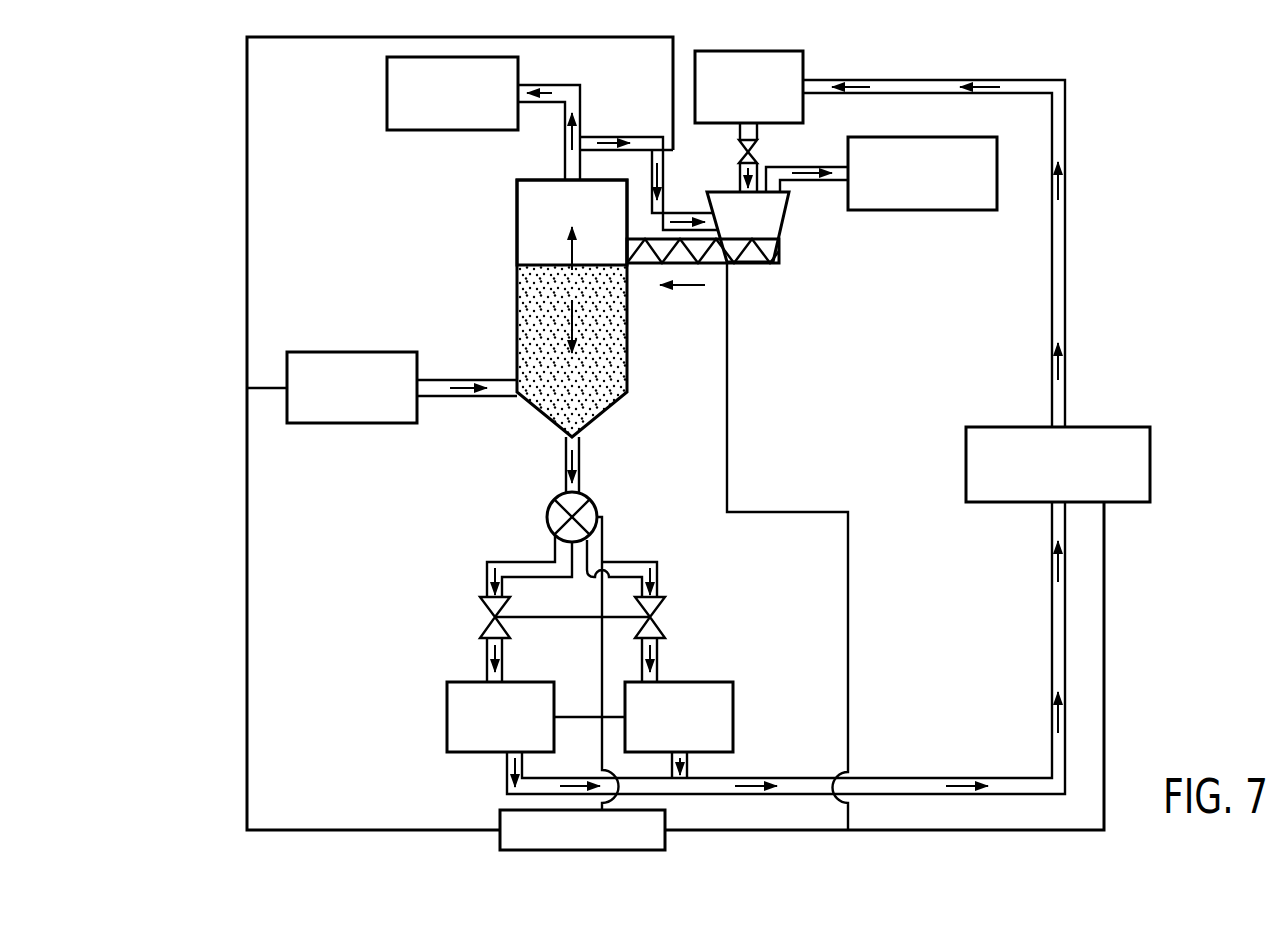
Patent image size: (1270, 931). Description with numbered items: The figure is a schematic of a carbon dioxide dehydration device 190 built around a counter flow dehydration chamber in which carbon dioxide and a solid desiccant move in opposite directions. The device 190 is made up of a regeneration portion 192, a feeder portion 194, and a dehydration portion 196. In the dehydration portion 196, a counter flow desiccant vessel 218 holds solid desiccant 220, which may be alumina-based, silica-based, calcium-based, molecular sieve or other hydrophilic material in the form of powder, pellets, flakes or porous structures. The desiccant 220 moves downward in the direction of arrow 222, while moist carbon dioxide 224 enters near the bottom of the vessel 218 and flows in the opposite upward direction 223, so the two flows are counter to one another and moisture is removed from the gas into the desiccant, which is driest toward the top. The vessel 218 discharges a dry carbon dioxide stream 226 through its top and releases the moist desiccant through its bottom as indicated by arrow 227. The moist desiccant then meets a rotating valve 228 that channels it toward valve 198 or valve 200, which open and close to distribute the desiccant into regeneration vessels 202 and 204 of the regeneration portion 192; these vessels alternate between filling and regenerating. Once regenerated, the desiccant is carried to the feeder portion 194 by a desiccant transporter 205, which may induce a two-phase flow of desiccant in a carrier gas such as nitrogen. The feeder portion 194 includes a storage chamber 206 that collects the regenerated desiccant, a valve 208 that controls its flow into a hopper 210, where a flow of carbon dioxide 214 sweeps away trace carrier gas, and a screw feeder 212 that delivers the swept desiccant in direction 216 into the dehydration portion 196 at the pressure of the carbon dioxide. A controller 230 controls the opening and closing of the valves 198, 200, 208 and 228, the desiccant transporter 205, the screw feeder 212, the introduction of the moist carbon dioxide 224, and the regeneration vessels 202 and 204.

The carbon dioxide dehydration device 190 is at (205, 118).
The regeneration portion 192 is at (412, 578).
The feeder portion 194 is at (808, 259).
The dehydration portion 196 is at (638, 368).
The valve 198 is at (665, 612).
The valve 200 is at (478, 612).
The regeneration vessel 202 is at (447, 715).
The regeneration vessel 204 is at (733, 715).
The desiccant transporter 205 is at (966, 464).
The storage chamber 206 is at (803, 62).
The valve 208 is at (757, 150).
The hopper 210 is at (783, 217).
The screw feeder 212 is at (757, 265).
The flow of carbon dioxide 214 is at (955, 210).
The direction 216 is at (690, 290).
The counter flow desiccant vessel 218 is at (517, 223).
The solid desiccant 220 is at (557, 388).
The arrow 222 is at (571, 318).
The upward direction 223 is at (571, 251).
The moist carbon dioxide 224 is at (352, 424).
The dry carbon dioxide stream 226 is at (387, 94).
The arrow 227 is at (566, 455).
The rotating valve 228 is at (600, 513).
The controller 230 is at (500, 812).